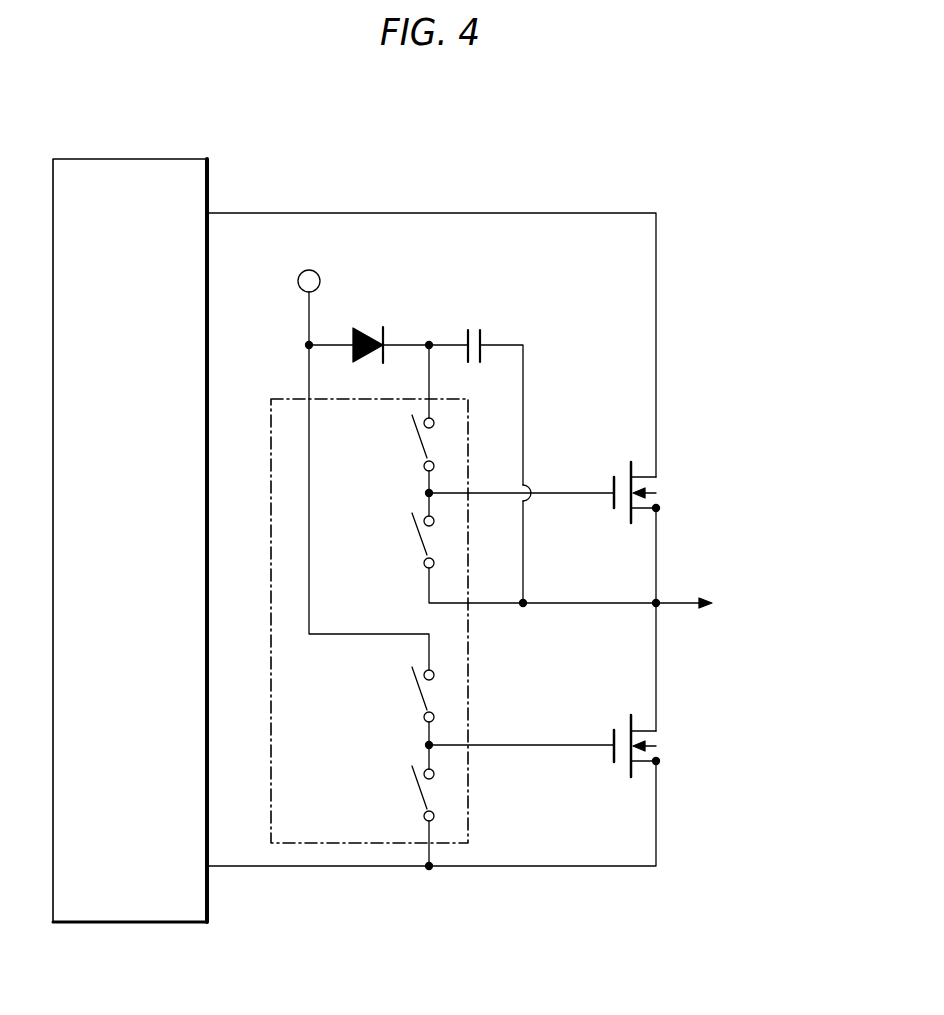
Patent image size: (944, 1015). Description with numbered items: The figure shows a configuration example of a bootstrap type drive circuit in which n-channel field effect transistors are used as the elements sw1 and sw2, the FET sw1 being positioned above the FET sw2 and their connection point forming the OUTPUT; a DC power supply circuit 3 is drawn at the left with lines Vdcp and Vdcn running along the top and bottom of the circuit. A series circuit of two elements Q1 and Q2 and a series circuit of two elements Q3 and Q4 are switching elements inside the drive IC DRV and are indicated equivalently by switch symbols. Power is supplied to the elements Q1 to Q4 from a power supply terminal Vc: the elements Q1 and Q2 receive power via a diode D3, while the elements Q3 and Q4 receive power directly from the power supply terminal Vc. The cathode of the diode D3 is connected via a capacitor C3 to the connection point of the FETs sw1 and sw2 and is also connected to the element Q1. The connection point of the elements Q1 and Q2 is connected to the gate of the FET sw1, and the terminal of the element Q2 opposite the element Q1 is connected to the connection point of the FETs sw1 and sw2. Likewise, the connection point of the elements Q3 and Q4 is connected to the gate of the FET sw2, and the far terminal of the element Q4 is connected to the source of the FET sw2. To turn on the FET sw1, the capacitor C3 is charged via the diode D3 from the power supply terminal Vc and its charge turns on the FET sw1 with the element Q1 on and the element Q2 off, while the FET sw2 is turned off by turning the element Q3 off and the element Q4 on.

The DC power supply circuit 3 is at (130, 158).
The positive DC voltage line Vdcp is at (432, 330).
The negative DC voltage line Vdcn is at (432, 829).
The power supply terminal Vc is at (314, 270).
The diode D3 is at (372, 327).
The capacitor C3 is at (486, 333).
The DRV IC DRV is at (290, 398).
The element Q1 is at (408, 421).
The element Q2 is at (519, 548).
The element Q3 is at (408, 708).
The element Q4 is at (408, 805).
The FET sw1 is at (684, 479).
The FET sw2 is at (684, 733).
The output terminal OUTPUT is at (727, 603).